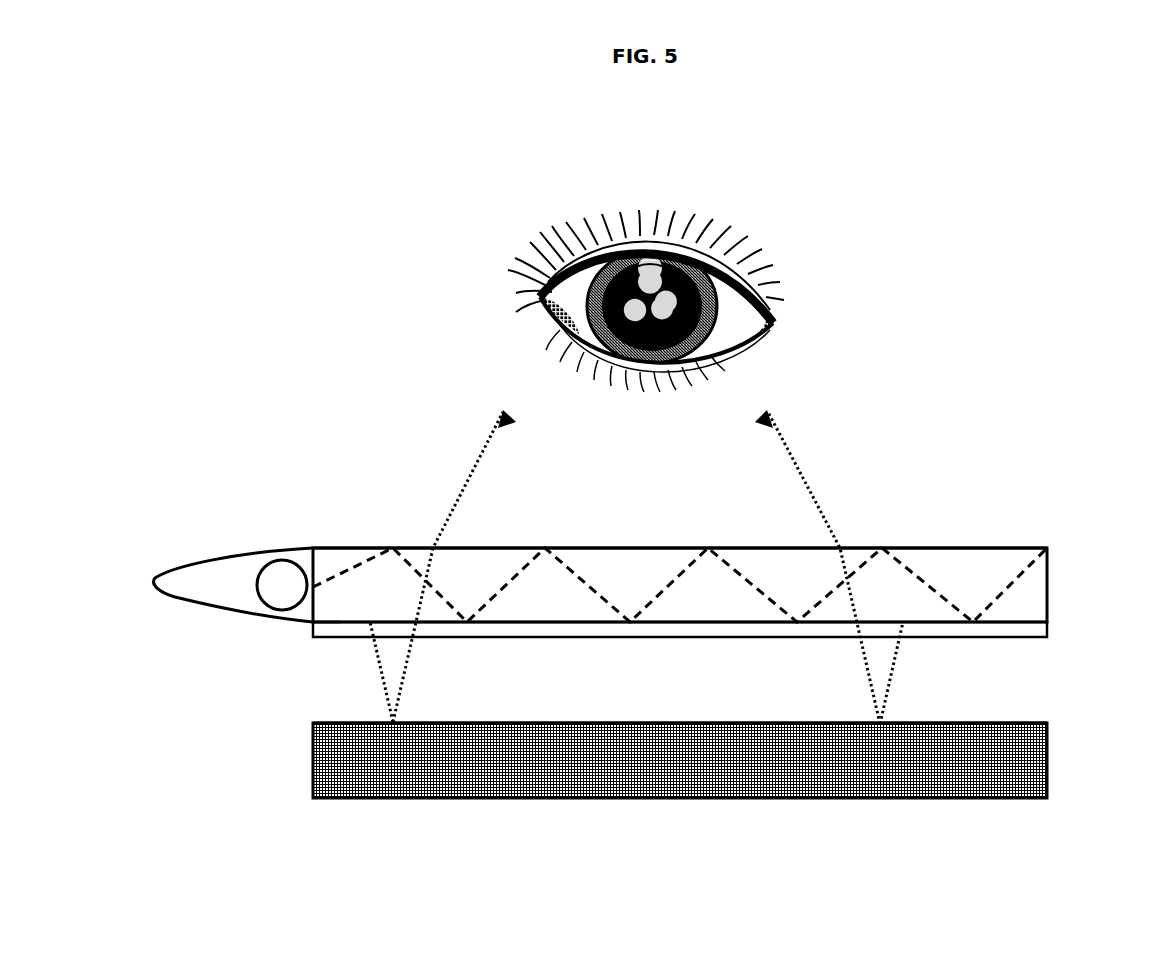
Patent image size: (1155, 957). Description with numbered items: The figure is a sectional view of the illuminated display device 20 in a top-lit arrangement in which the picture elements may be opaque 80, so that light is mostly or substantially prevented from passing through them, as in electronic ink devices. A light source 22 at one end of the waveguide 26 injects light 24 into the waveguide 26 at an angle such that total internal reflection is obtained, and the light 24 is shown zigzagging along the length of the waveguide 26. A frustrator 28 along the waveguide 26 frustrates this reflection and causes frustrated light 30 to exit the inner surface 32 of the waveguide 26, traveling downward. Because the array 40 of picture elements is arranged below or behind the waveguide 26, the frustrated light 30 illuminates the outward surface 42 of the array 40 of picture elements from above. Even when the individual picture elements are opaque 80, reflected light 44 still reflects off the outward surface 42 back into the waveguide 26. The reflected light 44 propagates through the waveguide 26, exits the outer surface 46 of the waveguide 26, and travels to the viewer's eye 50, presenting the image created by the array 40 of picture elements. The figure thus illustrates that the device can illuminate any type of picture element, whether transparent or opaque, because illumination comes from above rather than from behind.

The illuminated display device 20 is at (1085, 295).
The light source 22 is at (266, 568).
The light 24 is at (350, 570).
The waveguide 26 is at (1047, 585).
The frustrator 28 is at (1047, 628).
The frustrated light 30 is at (380, 677).
The inner surface 32 is at (328, 625).
The array of picture elements 40 is at (1048, 781).
The outward surface 42 is at (1020, 723).
The reflected light 44 is at (407, 672).
The outer surface 46 is at (1007, 548).
The viewer's eye 50 is at (485, 288).
The opaque 80 is at (608, 777).